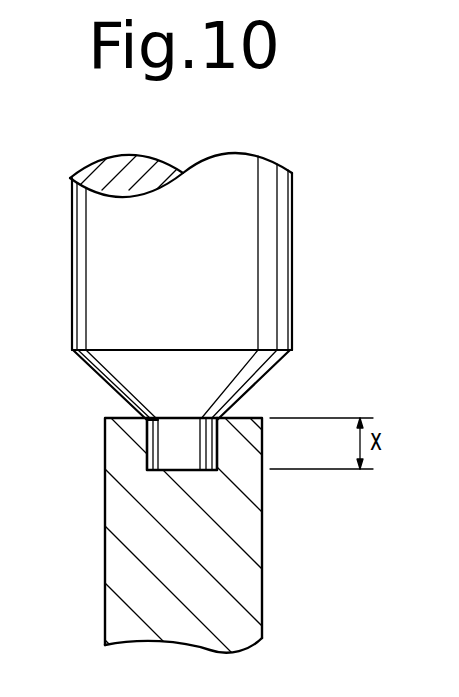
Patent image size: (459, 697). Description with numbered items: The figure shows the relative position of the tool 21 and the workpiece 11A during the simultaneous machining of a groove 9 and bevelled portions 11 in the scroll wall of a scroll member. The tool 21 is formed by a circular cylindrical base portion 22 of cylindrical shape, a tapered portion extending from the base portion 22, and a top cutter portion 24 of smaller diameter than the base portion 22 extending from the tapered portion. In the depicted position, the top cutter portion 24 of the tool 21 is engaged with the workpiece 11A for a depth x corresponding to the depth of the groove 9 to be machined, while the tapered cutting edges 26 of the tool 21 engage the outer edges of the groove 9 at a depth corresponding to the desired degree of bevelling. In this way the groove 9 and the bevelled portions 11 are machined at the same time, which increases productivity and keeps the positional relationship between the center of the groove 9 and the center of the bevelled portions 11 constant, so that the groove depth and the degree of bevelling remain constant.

The tool 21 is at (239, 280).
The circular cylindrical base portion 22 is at (291, 240).
The tapered cutting edge 26 is at (270, 367).
The top cutter portion 24 is at (207, 448).
The groove 9 is at (143, 449).
The bevelled portion 11 is at (151, 423).
The block 11A is at (263, 542).